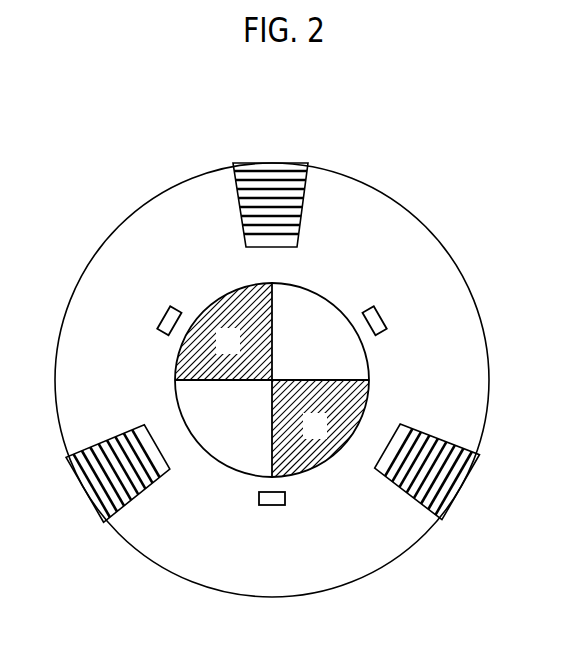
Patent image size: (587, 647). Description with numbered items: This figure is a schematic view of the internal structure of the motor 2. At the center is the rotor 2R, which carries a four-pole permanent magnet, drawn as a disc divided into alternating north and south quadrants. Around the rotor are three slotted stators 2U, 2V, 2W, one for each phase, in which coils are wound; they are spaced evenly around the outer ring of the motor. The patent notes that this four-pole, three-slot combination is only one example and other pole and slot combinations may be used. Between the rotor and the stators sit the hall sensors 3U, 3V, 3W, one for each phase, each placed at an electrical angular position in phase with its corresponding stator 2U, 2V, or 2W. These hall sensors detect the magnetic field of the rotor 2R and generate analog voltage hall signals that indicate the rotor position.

The motor 2 is at (492, 131).
The rotor 2R is at (312, 291).
The stator 2U is at (270, 162).
The stator 2V is at (81, 490).
The stator 2W is at (463, 488).
The hall sensor 3U is at (165, 315).
The hall sensor 3V is at (383, 313).
The hall sensor 3W is at (271, 506).